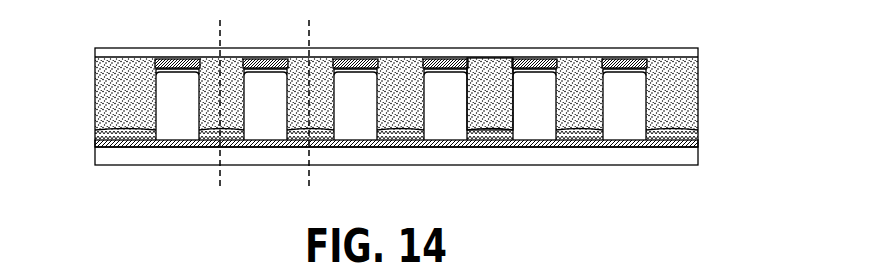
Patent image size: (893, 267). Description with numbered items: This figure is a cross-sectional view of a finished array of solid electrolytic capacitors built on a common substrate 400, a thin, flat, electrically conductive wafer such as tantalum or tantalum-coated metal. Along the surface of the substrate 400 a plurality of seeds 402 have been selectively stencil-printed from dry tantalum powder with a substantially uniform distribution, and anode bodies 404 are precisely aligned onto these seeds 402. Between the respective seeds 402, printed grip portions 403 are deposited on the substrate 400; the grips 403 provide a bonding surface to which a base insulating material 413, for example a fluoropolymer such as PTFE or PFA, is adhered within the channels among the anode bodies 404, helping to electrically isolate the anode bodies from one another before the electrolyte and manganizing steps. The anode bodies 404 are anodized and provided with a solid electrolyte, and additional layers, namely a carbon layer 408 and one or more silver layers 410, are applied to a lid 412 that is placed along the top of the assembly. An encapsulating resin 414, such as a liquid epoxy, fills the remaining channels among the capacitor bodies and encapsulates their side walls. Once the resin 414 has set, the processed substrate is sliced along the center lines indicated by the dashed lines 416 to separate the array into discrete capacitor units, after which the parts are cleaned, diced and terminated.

The substrate layer 400 is at (113, 156).
The seeds 402 is at (175, 147).
The printed grip portions 403 is at (585, 148).
The anode bodies 404 is at (165, 125).
The carbon layer 408 is at (540, 62).
The silver layers 410 is at (628, 62).
The lid 412 is at (396, 56).
The base insulating material 413 is at (698, 137).
The encapsulating resin 414 is at (489, 66).
The dashed lines 416 is at (220, 179).